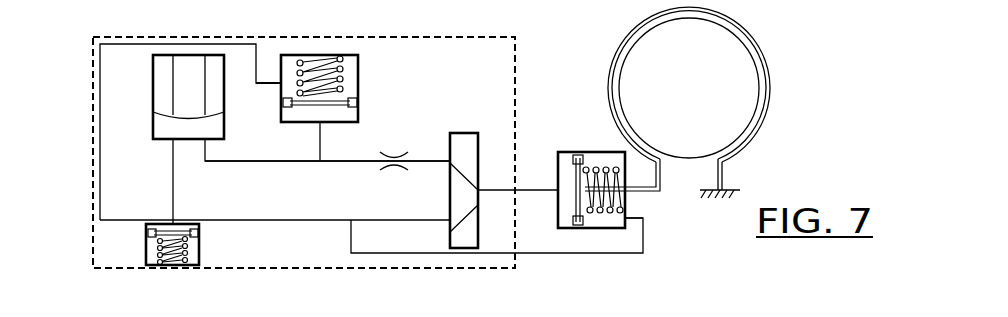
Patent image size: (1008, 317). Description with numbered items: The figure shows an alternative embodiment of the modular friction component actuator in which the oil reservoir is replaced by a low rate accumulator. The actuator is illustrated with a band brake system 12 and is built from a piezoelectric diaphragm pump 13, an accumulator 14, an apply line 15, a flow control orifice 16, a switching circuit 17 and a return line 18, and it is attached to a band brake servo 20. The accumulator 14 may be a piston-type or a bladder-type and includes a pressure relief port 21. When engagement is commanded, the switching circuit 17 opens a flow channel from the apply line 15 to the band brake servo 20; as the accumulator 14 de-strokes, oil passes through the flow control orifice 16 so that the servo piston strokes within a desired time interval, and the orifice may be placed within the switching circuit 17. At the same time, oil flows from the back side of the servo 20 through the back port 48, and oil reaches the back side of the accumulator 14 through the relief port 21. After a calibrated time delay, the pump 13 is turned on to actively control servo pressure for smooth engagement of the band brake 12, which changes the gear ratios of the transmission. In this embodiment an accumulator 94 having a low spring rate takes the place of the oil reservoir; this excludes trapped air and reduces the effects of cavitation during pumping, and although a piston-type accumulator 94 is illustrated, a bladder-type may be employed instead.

The band brake system 12 is at (612, 45).
The piezoelectric diaphragm pump 13 is at (155, 120).
The accumulator 14 is at (345, 55).
The apply line 15 is at (343, 162).
The flow control orifice 16 is at (395, 153).
The switching circuit 17 is at (466, 133).
The return line 18 is at (577, 253).
The band brake servo 20 is at (585, 152).
The pressure relief port 21 is at (268, 85).
The back port 48 is at (641, 217).
The low spring rate accumulator 94 is at (199, 248).